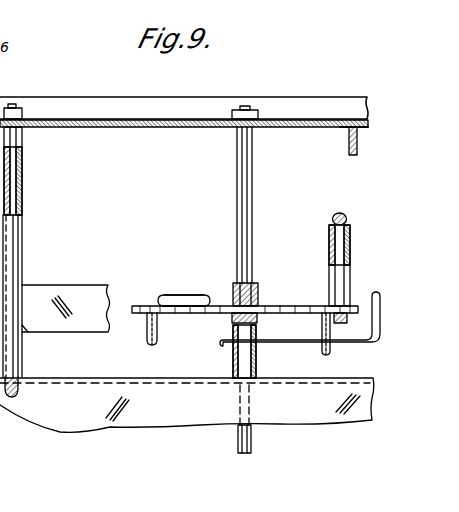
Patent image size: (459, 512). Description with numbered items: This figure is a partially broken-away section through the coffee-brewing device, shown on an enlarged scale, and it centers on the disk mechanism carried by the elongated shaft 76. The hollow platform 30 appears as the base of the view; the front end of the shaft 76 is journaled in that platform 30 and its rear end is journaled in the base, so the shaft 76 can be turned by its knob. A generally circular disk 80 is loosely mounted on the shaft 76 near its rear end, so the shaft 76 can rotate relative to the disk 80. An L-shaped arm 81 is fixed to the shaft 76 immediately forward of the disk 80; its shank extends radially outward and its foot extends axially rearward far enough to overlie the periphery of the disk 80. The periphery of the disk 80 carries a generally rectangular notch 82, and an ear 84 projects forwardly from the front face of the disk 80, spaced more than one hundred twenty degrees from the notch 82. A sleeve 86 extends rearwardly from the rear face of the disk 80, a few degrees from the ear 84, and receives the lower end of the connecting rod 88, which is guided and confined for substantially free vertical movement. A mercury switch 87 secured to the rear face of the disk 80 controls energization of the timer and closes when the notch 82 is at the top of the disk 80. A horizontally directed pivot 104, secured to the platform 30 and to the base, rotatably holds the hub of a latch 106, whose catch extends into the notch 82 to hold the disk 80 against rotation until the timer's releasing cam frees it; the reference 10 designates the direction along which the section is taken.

The axis / direction of movement 10 is at (237, 217).
The platform 30 is at (314, 415).
The elongated shaft 76 is at (237, 438).
The disk 80 is at (207, 296).
The L-shaped arm 81 is at (292, 348).
The notch 82 is at (150, 306).
The ear 84 is at (331, 346).
The sleeve 86 is at (332, 274).
The mercury switch 87 is at (172, 295).
The connecting rod 88 is at (341, 213).
The pivot 104 is at (23, 163).
The latch 106 is at (70, 298).